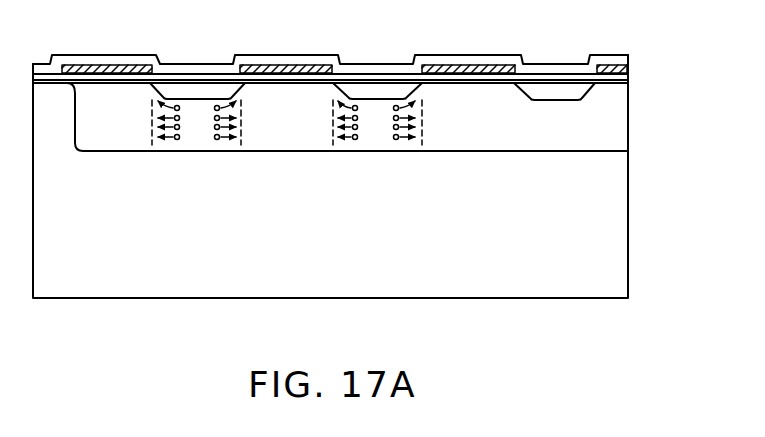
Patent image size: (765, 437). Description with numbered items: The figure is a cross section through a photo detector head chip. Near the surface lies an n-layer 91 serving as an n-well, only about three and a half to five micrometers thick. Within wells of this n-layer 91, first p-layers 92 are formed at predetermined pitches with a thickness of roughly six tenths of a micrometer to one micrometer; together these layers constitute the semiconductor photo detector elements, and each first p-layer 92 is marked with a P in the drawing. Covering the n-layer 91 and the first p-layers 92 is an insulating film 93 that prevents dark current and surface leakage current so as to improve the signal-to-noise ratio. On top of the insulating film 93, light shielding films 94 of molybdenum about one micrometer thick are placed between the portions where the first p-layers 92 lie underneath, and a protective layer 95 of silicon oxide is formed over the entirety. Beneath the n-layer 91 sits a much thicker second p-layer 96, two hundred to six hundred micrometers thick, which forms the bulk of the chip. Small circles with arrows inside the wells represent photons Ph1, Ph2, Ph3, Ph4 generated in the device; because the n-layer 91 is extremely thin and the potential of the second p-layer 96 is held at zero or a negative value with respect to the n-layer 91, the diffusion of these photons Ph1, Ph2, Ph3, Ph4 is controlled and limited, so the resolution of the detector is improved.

The n-layer 91 is at (620, 123).
The first p-layer 92 is at (540, 84).
The insulating film 93 is at (632, 76).
The light shielding film 94 is at (483, 68).
The protective layer 95 is at (447, 58).
The second p-layer 96 is at (613, 223).
The photon Ph1 is at (393, 110).
The photon Ph2 is at (394, 120).
The photon Ph3 is at (395, 129).
The photon Ph4 is at (396, 140).